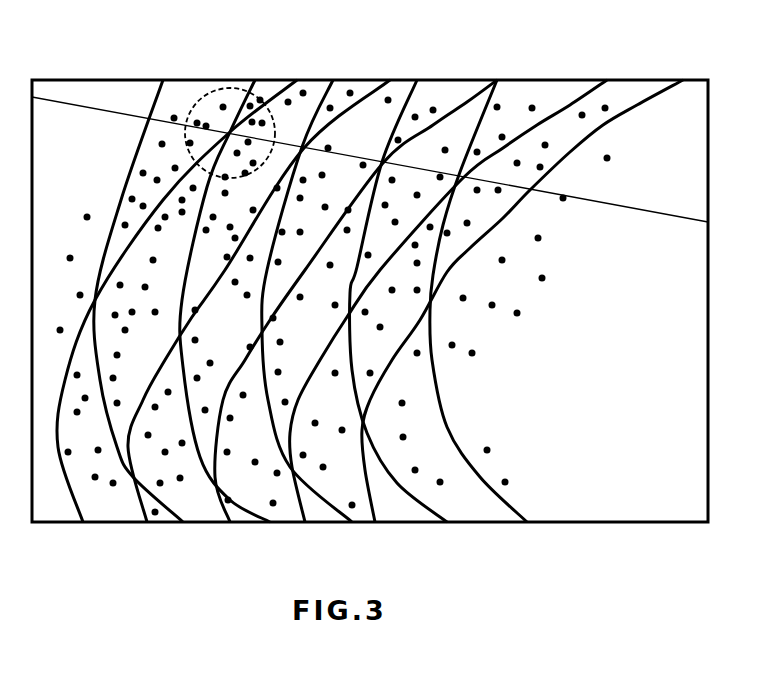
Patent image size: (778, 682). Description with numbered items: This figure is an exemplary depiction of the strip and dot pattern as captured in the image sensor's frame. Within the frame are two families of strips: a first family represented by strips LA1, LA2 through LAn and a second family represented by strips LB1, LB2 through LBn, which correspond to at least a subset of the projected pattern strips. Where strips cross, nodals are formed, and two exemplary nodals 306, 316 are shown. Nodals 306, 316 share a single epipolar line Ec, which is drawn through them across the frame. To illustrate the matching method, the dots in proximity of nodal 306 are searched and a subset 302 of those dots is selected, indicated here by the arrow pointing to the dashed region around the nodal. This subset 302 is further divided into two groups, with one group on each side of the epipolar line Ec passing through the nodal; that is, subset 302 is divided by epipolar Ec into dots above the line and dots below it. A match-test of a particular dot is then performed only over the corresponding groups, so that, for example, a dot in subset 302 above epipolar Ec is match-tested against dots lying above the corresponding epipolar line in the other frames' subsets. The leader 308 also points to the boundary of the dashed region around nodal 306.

The subset of dots 302 is at (181, 93).
The nodal 306 is at (228, 128).
The boundary of region 308 is at (245, 90).
The nodal 316 is at (304, 146).
The strip LA1 is at (117, 200).
The strip LA2 is at (200, 262).
The n-th line of family A LAn is at (450, 433).
The strip LB1 is at (72, 510).
The strip LB2 is at (140, 512).
The n-th line of family B LBn is at (628, 118).
The epipolar line Ec is at (638, 213).